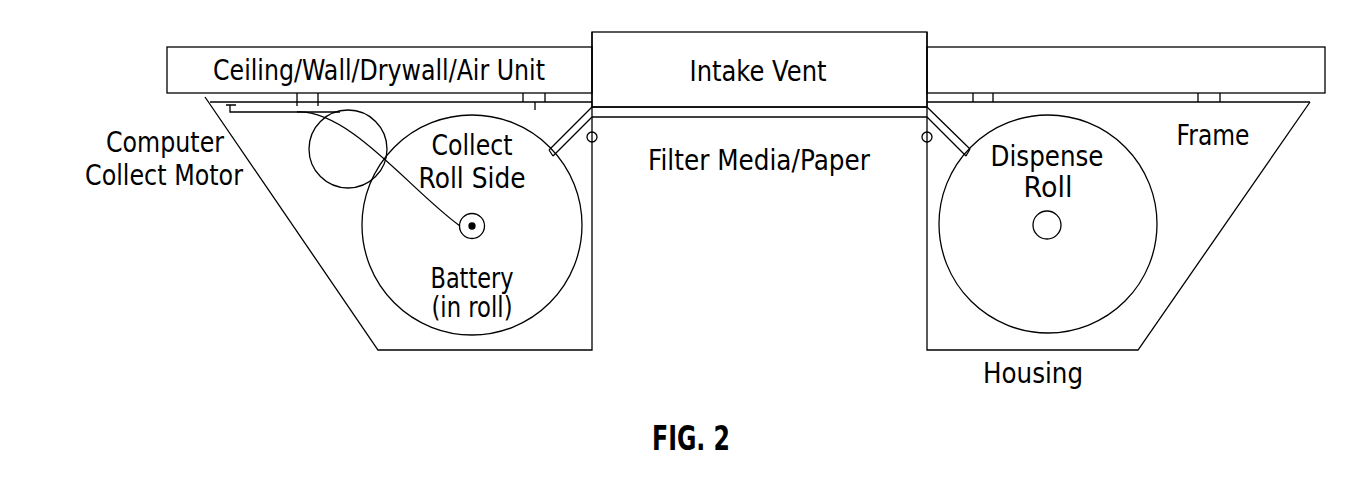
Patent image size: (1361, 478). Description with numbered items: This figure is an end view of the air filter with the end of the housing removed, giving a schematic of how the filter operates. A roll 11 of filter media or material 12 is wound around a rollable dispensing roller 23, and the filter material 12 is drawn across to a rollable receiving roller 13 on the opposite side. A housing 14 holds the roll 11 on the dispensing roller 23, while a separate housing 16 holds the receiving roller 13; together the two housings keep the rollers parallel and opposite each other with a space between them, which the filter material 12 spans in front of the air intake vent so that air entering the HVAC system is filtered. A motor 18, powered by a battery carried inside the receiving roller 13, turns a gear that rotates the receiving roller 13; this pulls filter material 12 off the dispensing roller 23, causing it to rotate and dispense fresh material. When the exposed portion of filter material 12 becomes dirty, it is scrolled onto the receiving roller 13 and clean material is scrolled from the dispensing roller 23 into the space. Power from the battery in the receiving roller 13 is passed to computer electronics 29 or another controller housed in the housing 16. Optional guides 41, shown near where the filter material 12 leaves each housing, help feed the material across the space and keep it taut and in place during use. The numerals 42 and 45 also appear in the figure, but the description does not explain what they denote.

The roll 11 is at (981, 249).
The filter media or material 12 is at (591, 109).
The receiving roller 13 is at (486, 227).
The housing 14 is at (1198, 263).
The housing 16 is at (322, 271).
The motor 18 is at (347, 180).
The dispensing roller 23 is at (1048, 238).
The computer electronics 29 is at (230, 106).
The guides 41 is at (597, 140).
The hanger bracket 42 is at (308, 102).
The battery 45 is at (461, 229).